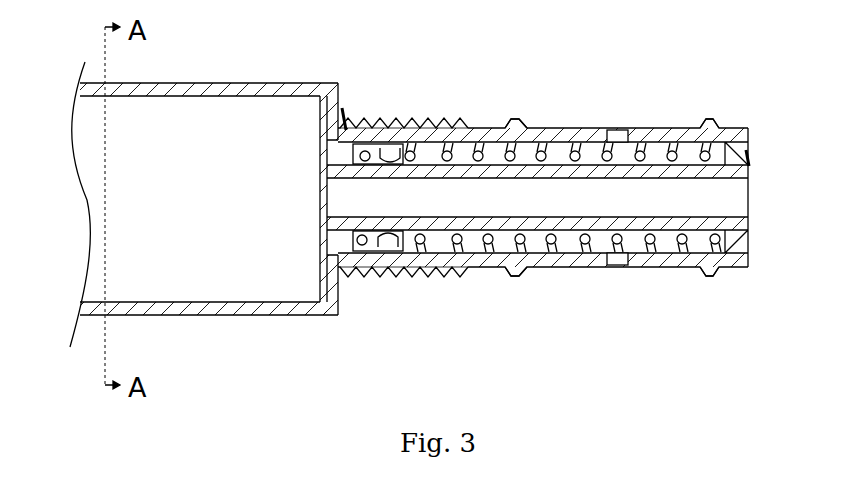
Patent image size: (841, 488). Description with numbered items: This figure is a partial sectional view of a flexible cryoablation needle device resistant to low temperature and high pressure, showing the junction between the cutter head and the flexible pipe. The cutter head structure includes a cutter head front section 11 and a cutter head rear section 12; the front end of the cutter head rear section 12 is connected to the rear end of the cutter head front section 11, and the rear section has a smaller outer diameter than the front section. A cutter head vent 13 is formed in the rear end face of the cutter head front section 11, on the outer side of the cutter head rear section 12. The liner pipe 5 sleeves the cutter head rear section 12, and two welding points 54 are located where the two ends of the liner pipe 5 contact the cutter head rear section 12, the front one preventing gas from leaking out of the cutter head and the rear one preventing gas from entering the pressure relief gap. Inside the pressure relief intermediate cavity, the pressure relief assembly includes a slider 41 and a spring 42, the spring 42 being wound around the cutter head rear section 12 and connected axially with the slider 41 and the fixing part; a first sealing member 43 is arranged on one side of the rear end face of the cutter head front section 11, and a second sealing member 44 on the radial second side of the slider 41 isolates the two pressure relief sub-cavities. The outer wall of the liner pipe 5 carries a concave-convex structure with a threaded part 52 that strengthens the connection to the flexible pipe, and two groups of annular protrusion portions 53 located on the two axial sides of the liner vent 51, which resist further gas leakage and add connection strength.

The cutter head front section 11 is at (273, 307).
The cutter head vent 13 is at (317, 315).
The first sealing member 43 is at (358, 278).
The spring 42 is at (675, 138).
The threaded part 52 is at (458, 125).
The slider 41 is at (408, 125).
The annular protrusion portion 53 is at (518, 122).
The liner vent 51 is at (618, 133).
The cutter head rear section 12 is at (655, 258).
The welding point 54 is at (340, 125).
The second sealing member 44 is at (385, 278).
The liner pipe 5 is at (495, 275).